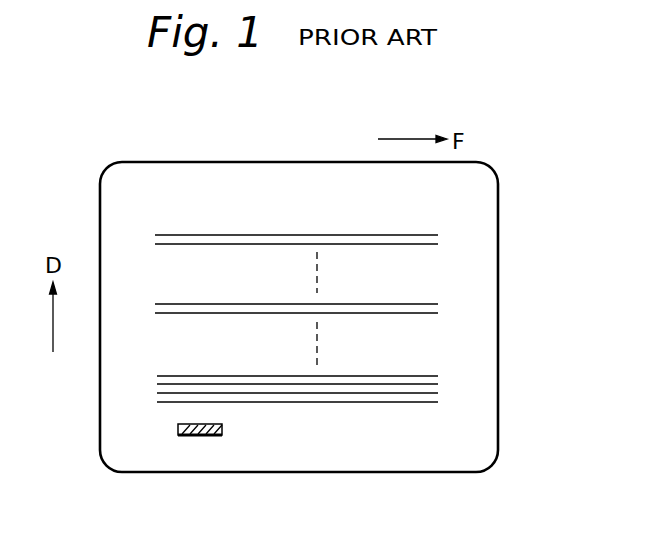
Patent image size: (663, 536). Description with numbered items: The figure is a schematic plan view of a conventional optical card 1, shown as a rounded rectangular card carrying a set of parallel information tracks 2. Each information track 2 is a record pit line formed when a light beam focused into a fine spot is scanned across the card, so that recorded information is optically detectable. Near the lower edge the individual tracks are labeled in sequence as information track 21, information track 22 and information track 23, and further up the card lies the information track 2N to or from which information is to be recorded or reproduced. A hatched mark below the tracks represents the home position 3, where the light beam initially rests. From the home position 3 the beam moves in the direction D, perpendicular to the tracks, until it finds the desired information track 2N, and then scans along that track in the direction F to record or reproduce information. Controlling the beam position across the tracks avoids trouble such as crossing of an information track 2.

The optical card 1 is at (498, 200).
The information track 2 is at (286, 326).
The home position 3 is at (187, 437).
The information track 2N is at (272, 316).
The information track 23 is at (277, 379).
The information track 22 is at (277, 392).
The information track 21 is at (277, 405).